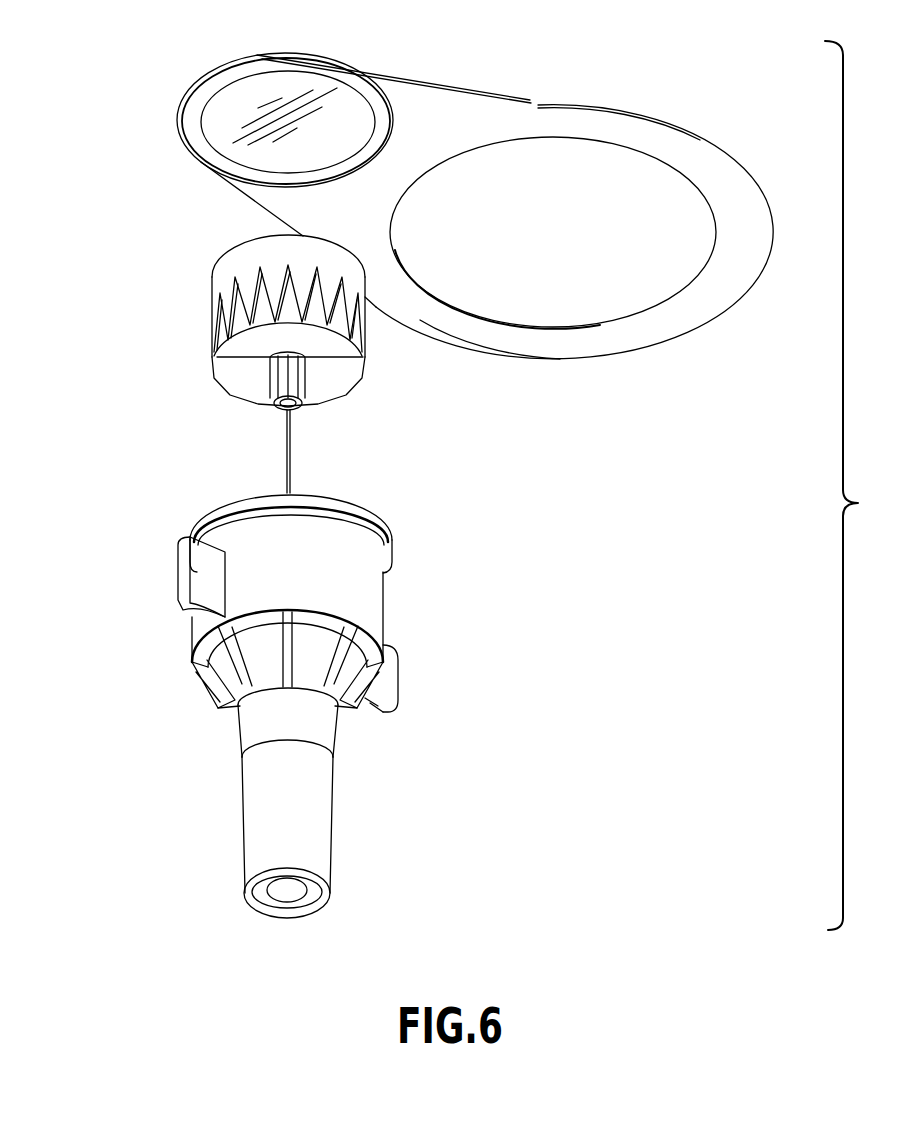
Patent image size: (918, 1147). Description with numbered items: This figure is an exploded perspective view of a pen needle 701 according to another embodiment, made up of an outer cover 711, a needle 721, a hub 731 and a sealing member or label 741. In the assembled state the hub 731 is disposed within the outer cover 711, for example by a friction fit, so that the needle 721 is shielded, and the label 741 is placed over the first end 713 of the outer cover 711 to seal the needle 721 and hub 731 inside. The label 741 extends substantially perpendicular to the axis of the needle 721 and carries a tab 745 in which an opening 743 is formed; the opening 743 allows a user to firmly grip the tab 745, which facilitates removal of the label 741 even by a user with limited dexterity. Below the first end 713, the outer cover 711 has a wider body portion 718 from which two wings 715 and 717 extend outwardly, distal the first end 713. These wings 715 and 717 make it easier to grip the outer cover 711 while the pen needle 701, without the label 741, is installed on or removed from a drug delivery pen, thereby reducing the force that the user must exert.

The pen needle 701 is at (171, 443).
The outer cover 711 is at (335, 833).
The first end 713 is at (392, 552).
The wing 715 is at (395, 712).
The wing 717 is at (182, 570).
The wider body portion 718 is at (387, 605).
The needle 721 is at (293, 453).
The hub 731 is at (212, 278).
The sealing member or label 741 is at (472, 90).
The opening 743 is at (593, 140).
The tab 745 is at (606, 356).